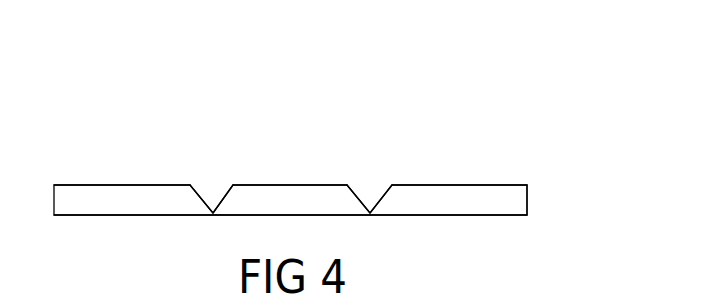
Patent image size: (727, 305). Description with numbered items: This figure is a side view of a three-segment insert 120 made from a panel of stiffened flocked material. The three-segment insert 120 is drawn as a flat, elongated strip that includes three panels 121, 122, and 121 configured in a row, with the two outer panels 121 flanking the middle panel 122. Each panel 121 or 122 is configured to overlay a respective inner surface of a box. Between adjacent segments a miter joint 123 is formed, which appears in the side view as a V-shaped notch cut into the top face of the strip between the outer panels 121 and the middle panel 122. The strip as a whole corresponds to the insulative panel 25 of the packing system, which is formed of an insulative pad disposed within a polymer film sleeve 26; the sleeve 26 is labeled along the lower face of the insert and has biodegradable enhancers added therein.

The three-segment insert 120 is at (488, 118).
The panel 121 is at (123, 185).
The panel 122 is at (292, 185).
The miter joint 123 is at (222, 195).
The insulative panel 25 is at (513, 198).
The polymer film sleeve 26 is at (460, 215).